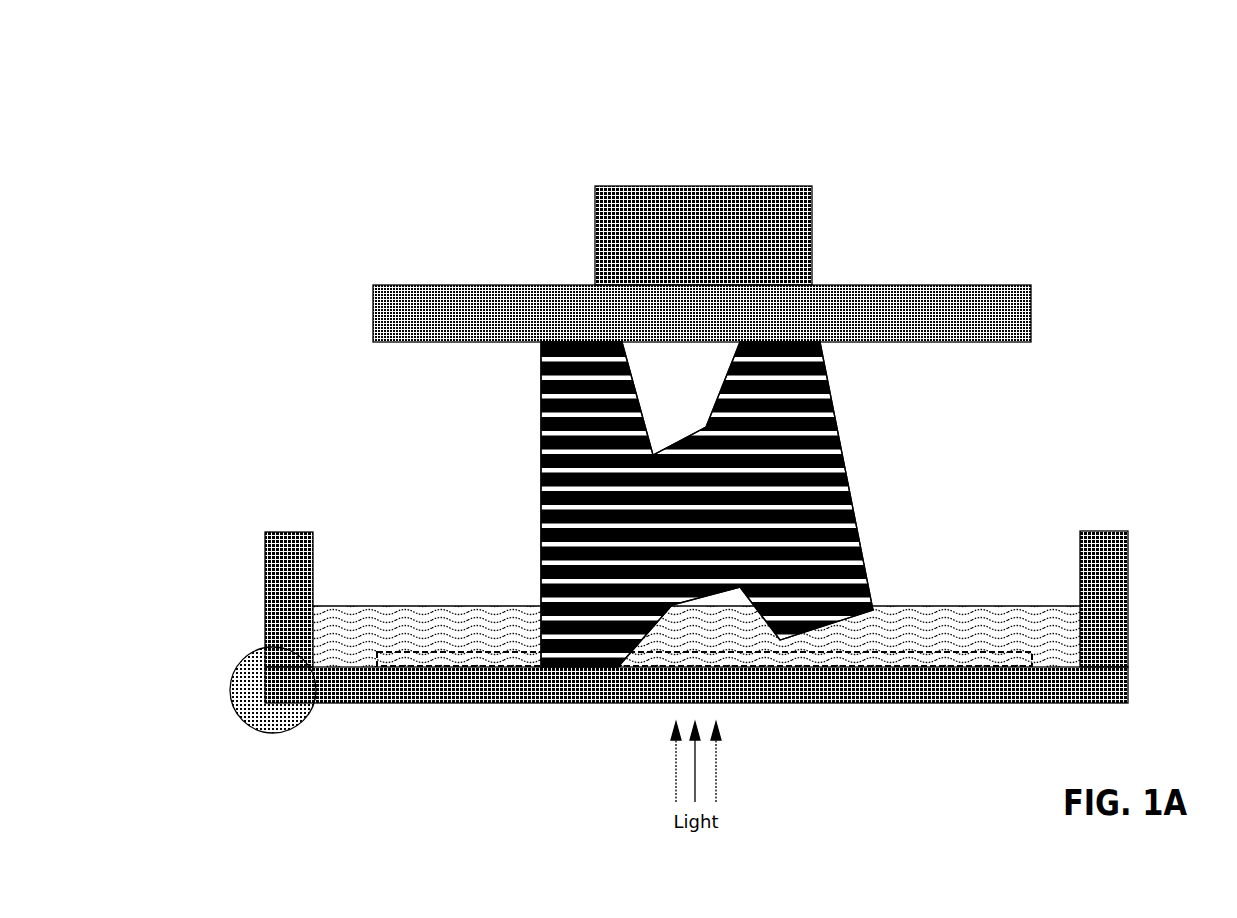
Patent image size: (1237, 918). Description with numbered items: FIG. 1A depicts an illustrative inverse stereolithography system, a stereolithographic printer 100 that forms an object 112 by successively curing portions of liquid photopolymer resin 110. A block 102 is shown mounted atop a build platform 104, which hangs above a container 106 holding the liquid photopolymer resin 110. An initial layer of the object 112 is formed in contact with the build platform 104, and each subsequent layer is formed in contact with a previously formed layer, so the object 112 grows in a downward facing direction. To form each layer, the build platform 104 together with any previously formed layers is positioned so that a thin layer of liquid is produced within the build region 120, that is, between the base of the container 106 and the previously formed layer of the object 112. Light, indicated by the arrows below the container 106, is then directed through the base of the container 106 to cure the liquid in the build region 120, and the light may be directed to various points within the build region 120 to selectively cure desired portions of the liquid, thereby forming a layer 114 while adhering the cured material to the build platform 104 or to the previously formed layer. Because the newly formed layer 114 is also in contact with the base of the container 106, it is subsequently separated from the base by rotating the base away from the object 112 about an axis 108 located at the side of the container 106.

The stereolithographic printer 100 is at (205, 113).
The drive/actuator block 102 is at (637, 202).
The build platform 104 is at (400, 300).
The container 106 is at (270, 543).
The axis 108 is at (292, 703).
The liquid photopolymer resin 110 is at (417, 612).
The object 112 is at (837, 433).
The layer 114 is at (578, 660).
The build region 120 is at (918, 652).